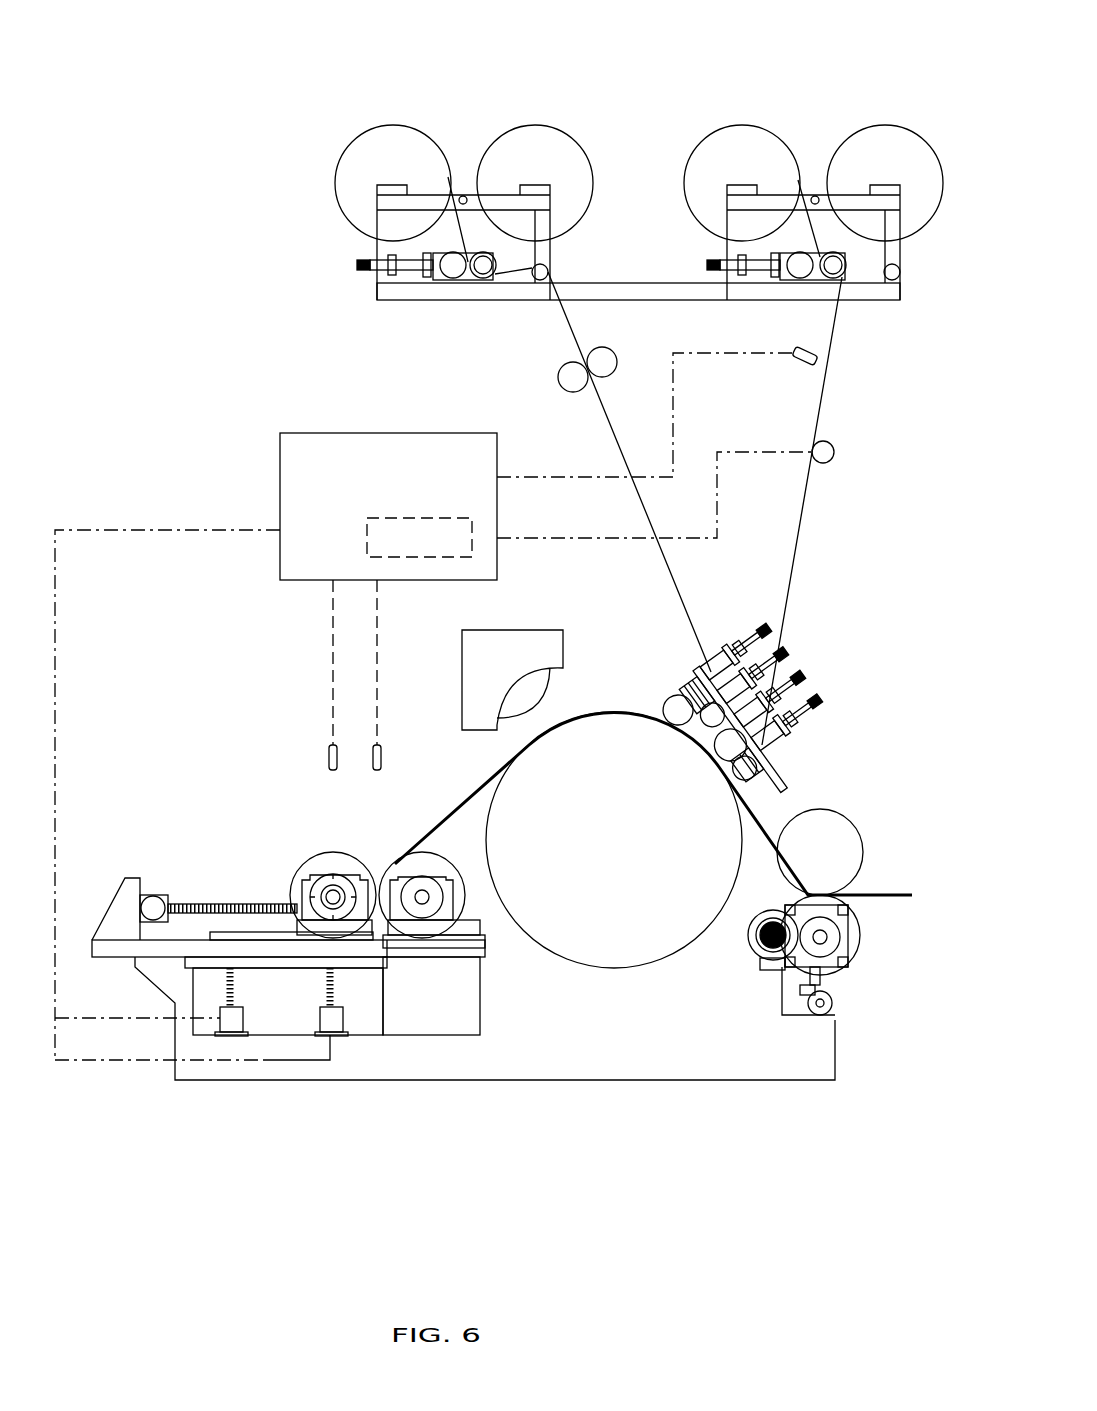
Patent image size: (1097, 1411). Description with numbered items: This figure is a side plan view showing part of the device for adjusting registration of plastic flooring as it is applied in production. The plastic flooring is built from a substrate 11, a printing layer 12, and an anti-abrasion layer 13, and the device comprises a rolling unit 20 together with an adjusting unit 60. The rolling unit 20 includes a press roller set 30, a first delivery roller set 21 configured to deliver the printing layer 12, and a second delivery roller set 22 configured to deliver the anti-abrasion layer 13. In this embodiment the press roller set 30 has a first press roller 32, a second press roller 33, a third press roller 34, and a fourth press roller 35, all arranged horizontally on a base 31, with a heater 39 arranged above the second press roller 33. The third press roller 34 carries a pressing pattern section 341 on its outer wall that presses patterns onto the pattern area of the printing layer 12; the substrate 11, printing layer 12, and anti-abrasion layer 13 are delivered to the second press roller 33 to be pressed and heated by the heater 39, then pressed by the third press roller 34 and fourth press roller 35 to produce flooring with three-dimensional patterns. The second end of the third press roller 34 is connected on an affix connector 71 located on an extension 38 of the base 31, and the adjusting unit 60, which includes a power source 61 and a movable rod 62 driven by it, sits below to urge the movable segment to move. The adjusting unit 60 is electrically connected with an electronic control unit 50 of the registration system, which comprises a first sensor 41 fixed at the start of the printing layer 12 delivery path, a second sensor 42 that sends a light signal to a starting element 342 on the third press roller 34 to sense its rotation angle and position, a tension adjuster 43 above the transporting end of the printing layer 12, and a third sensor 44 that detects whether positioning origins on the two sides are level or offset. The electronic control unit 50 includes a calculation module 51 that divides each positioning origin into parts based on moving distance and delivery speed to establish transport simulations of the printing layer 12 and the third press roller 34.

The rolling unit 20 is at (611, 58).
The first delivery roller set 21 is at (900, 250).
The second delivery roller set 22 is at (385, 245).
The printing layer 12 is at (835, 338).
The anti-abrasion layer 13 is at (568, 325).
The electronic control unit 50 is at (292, 498).
The calculation module 51 is at (472, 548).
The first sensor 41 is at (800, 365).
The tension adjuster 43 is at (832, 460).
The second sensor 42 is at (328, 752).
The third sensor 44 is at (382, 753).
The heater 39 is at (470, 680).
The press roller set 30 is at (838, 756).
The second press roller 33 is at (568, 940).
The extension 38 is at (97, 948).
The affix connector 71 is at (297, 902).
The third press roller 34 is at (313, 863).
The pressing pattern section 341 is at (325, 855).
The starting element 342 is at (340, 877).
The fourth press roller 35 is at (432, 863).
The base 31 is at (425, 965).
The adjusting unit 60 is at (258, 1123).
The power source 61 is at (243, 1020).
The movable rod 62 is at (240, 990).
The substrate 11 is at (850, 870).
The first press roller 32 is at (855, 952).